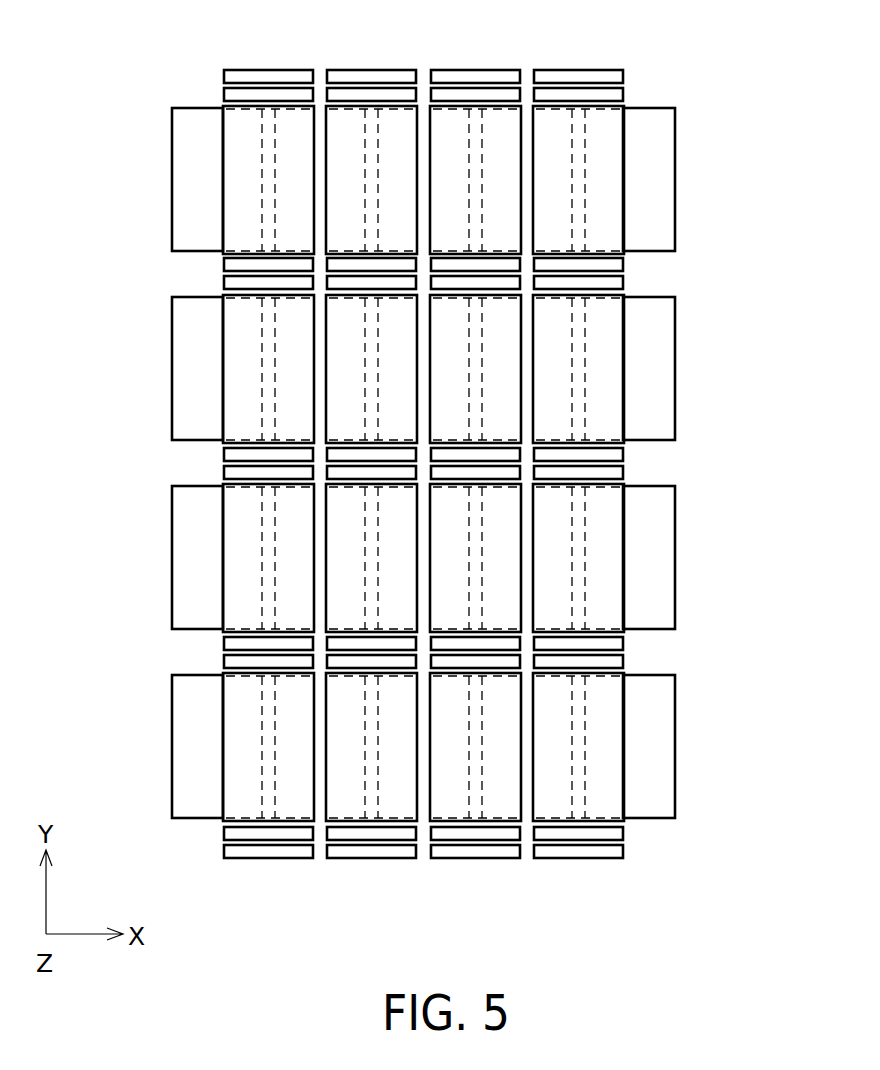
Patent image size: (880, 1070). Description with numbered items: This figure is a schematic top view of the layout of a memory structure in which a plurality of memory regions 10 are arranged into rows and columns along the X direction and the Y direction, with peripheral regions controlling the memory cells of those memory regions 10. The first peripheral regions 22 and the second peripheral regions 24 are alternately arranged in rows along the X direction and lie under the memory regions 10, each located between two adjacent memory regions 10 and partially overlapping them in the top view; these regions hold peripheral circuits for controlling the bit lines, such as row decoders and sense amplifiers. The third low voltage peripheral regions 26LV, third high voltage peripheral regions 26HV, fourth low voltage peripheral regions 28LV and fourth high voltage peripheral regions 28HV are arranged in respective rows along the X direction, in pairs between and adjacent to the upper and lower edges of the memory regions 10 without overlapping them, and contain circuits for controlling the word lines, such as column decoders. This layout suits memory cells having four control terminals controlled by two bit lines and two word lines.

The memory region 10 is at (270, 106).
The first peripheral region 22 is at (194, 107).
The second peripheral region 24 is at (320, 106).
The third high voltage peripheral region 26HV is at (623, 77).
The third low voltage peripheral region 26LV is at (623, 94).
The fourth high voltage peripheral region 28HV is at (623, 265).
The fourth low voltage peripheral region 28LV is at (623, 283).